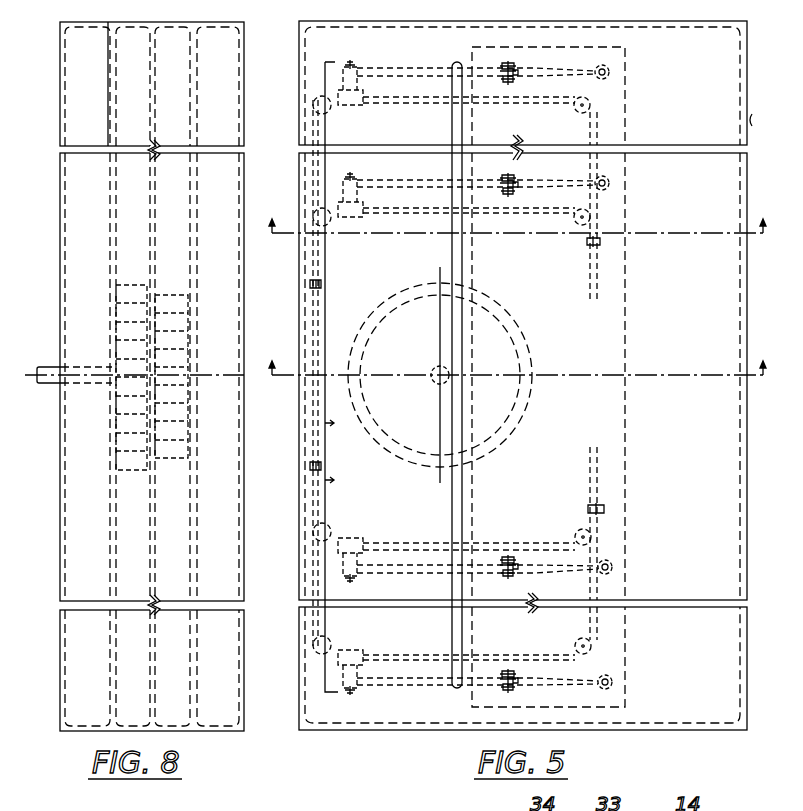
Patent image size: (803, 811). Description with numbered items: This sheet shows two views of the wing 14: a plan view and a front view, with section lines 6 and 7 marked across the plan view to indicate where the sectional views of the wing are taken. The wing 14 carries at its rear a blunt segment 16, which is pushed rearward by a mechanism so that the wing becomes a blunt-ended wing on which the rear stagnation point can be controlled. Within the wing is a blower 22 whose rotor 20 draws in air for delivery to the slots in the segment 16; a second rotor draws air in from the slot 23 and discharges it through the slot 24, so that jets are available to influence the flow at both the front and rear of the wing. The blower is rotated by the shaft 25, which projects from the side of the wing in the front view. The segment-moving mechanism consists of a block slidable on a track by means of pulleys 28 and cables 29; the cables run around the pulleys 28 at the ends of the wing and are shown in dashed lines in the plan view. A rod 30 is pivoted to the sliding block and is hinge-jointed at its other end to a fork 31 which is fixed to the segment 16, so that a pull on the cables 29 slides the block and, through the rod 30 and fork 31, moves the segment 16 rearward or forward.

In FIG. 5, the wing 14 is at (297, 113).
In FIG. 5, the blunt segment 16 is at (625, 472).
In FIG. 8, the rotor 20 is at (147, 285).
In FIG. 5, the rotor 20 is at (352, 355).
In FIG. 8, the blower 22 is at (188, 312).
In FIG. 5, the blower 22 is at (375, 325).
In FIG. 5, the slot 23 is at (453, 552).
In FIG. 5, the slot 24 is at (325, 497).
In FIG. 8, the shaft 25 is at (56, 386).
In FIG. 5, the pulleys 28 is at (578, 102).
In FIG. 5, the cables 29 is at (430, 97).
In FIG. 5, the rod 30 is at (432, 72).
In FIG. 5, the fork 31 is at (586, 72).
In FIG. 5, the section line 6 is at (517, 359).
In FIG. 5, the section line 7 is at (517, 217).